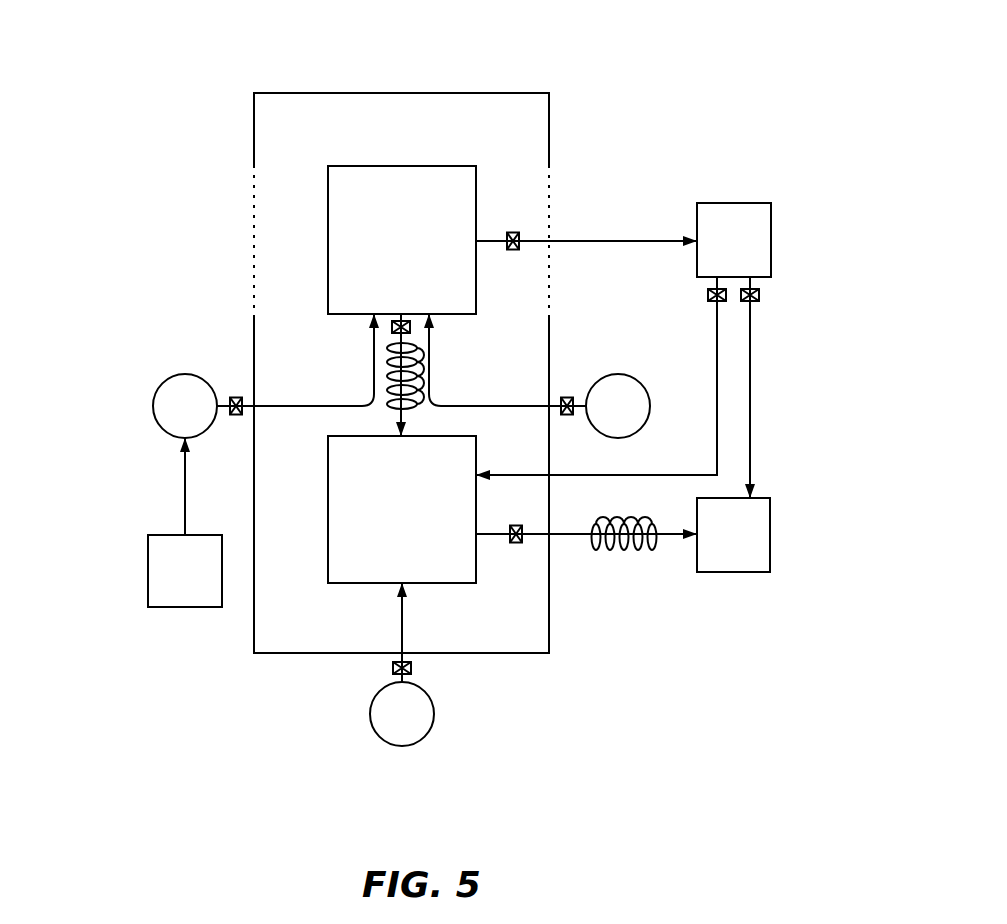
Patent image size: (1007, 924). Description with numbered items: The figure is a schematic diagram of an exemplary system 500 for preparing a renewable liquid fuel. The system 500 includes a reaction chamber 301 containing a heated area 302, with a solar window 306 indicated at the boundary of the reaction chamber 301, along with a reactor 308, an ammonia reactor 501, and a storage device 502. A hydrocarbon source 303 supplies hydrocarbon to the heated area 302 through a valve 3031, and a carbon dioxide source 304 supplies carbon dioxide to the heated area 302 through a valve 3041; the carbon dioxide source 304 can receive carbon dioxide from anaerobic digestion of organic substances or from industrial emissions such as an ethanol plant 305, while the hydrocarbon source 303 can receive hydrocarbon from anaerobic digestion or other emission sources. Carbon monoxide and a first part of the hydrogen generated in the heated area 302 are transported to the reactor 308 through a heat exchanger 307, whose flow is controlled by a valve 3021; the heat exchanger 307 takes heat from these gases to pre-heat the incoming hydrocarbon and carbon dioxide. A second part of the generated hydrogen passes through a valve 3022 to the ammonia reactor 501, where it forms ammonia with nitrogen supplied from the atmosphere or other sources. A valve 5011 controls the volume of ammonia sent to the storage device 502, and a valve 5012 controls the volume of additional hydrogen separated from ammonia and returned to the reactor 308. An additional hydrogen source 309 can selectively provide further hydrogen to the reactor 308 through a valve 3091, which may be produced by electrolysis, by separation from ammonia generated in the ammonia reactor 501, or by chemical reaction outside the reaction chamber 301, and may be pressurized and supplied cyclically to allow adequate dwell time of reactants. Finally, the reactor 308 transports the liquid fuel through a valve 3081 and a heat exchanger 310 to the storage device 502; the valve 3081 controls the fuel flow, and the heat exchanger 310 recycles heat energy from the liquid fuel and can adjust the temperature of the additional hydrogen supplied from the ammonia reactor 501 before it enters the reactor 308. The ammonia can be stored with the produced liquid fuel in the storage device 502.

The system 500 is at (165, 96).
The reaction chamber 301 is at (402, 362).
The heated area 302 is at (402, 230).
The valve 3021 is at (403, 320).
The valve 3022 is at (513, 232).
The solar window 306 is at (232, 238).
The heat exchanger 307 is at (392, 405).
The reactor 308 is at (402, 499).
The valve 3081 is at (516, 542).
The heat exchanger 310 is at (624, 546).
The hydrocarbon source 303 is at (636, 402).
The valve 3031 is at (567, 397).
The carbon dioxide source 304 is at (169, 402).
The valve 3041 is at (236, 397).
The ethanol plant 305 is at (193, 522).
The additional hydrogen source 309 is at (385, 714).
The valve 3091 is at (393, 669).
The ammonia reactor 501 is at (734, 229).
The valve 5011 is at (759, 295).
The valve 5012 is at (708, 295).
The storage device 502 is at (755, 534).